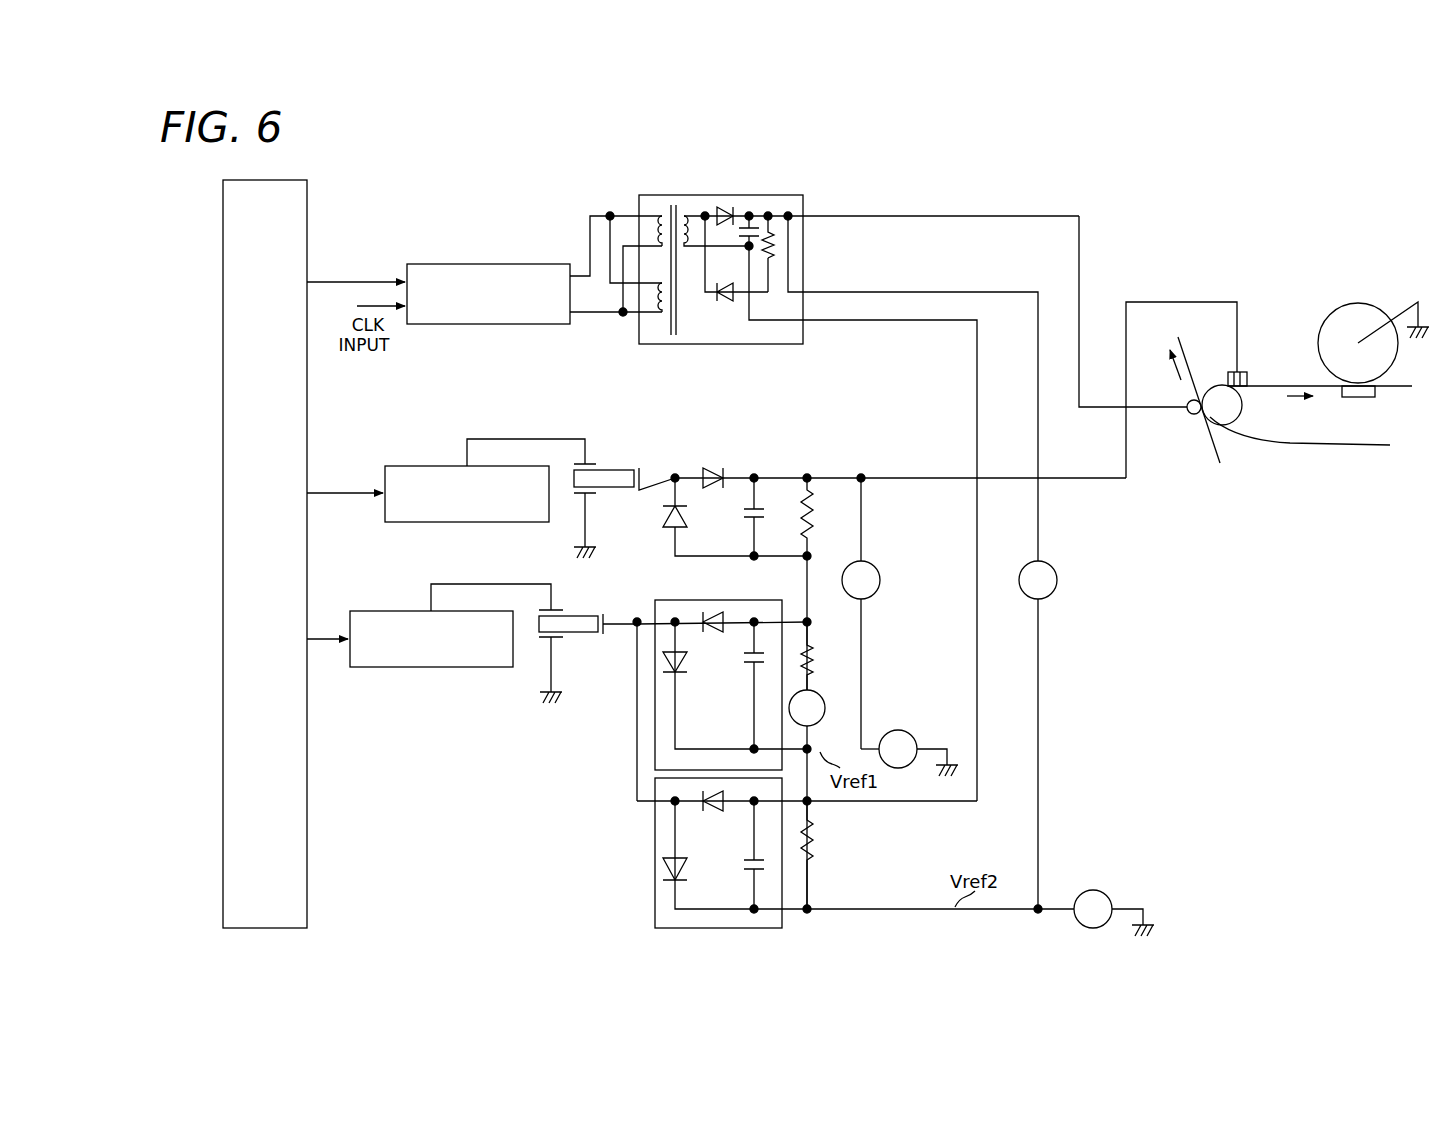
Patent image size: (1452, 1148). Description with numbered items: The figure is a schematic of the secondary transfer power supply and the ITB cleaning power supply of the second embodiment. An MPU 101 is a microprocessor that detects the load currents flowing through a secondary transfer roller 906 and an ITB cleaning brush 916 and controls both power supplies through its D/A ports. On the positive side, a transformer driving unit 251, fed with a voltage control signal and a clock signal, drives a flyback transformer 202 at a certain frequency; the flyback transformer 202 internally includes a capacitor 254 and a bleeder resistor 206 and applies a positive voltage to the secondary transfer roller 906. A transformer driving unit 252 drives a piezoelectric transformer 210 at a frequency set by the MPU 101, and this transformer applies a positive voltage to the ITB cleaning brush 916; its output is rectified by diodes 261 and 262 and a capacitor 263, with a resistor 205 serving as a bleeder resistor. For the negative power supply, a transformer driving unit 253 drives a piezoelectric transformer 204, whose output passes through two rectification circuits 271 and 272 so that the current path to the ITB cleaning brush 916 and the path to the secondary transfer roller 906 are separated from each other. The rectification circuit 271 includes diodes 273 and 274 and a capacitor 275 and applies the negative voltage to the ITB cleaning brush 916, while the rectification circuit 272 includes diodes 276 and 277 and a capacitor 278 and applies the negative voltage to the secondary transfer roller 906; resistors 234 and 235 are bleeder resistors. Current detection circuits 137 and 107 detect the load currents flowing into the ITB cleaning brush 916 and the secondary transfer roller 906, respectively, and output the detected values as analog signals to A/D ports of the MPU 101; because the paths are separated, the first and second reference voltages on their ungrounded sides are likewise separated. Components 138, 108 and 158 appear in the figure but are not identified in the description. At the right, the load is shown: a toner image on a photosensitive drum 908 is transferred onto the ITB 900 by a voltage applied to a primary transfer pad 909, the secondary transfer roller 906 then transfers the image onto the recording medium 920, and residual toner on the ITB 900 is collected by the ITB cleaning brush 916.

The MPU 101 is at (222, 383).
The transformer driving unit 251 is at (440, 264).
The transformer driving unit 252 is at (419, 466).
The transformer driving unit 253 is at (386, 611).
The flyback transformer 202 is at (859, 535).
The capacitor 254 is at (755, 226).
The bleeder resistor 206 is at (774, 240).
The piezoelectric transformer 210 is at (618, 470).
The piezoelectric transformer 204 is at (577, 635).
The diode 262 is at (712, 468).
The diode 261 is at (664, 518).
The capacitor 263 is at (754, 518).
The resistor 205 is at (812, 488).
The voltage detection circuit V1 138 is at (866, 562).
The voltage detection circuit V2 108 is at (1044, 564).
The rectification circuit 271 is at (719, 669).
The diode 273 is at (716, 632).
The diode 274 is at (683, 674).
The capacitor 275 is at (750, 666).
The bleeder resistor 234 is at (810, 646).
The voltage detection circuit V3 158 is at (820, 694).
The current detection circuit 137 is at (902, 728).
The rectification circuit 272 is at (702, 853).
The diode 277 is at (716, 811).
The diode 276 is at (662, 869).
The capacitor 278 is at (742, 871).
The bleeder resistor 235 is at (814, 829).
The current detection circuit 107 is at (1099, 890).
The secondary transfer roller 906 is at (1188, 400).
The ITB cleaning brush 916 is at (1243, 372).
The photosensitive drum 908 is at (1338, 306).
The primary transfer pad 909 is at (1362, 398).
The recording medium 920 is at (1220, 458).
The ITB 900 is at (1305, 447).